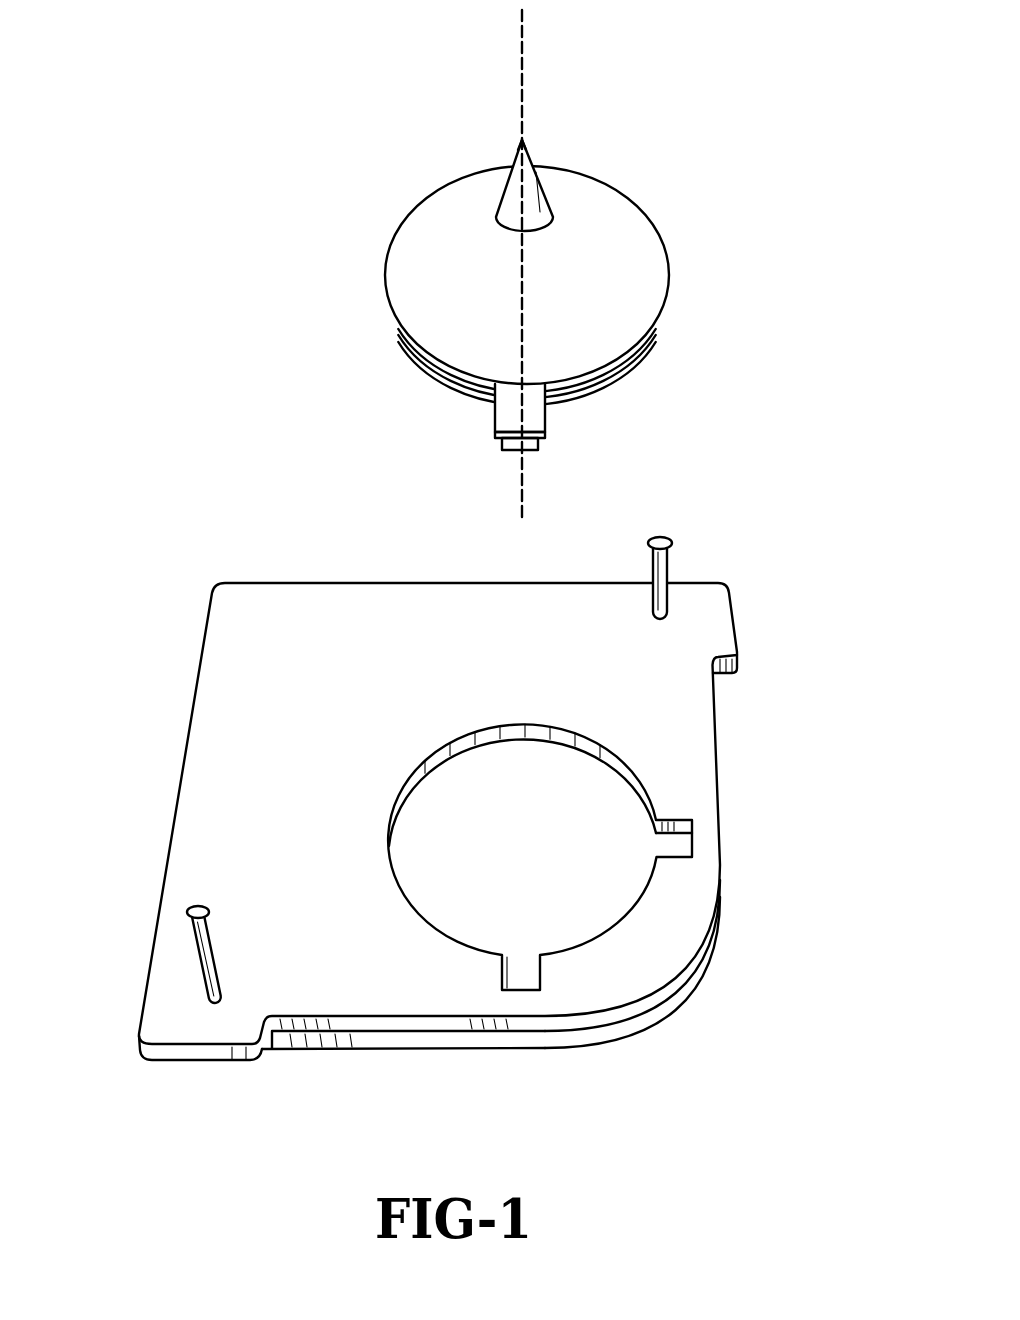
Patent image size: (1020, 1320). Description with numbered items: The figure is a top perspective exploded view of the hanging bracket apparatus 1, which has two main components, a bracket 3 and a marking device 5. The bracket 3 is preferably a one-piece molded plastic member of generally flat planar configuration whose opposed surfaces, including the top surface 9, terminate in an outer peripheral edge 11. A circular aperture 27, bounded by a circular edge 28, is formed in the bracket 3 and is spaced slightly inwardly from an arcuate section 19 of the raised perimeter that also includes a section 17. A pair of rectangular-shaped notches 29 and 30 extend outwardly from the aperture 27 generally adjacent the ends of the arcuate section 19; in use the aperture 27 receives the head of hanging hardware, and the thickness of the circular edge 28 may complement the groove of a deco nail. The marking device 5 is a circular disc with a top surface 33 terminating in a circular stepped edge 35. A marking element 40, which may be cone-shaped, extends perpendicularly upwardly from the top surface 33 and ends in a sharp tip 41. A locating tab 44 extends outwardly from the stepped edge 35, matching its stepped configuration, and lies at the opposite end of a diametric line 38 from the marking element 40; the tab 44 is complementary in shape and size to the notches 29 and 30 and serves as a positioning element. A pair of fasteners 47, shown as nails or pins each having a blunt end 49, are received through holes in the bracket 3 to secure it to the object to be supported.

The apparatus 1 is at (180, 97).
The bracket 3 is at (403, 570).
The marking device 5 is at (435, 178).
The top surface 9 is at (202, 825).
The outer peripheral edge 11 is at (197, 683).
The section 17 is at (388, 1040).
The arcuate section 19 is at (655, 988).
The aperture 27 is at (638, 797).
The circular edge 28 is at (592, 748).
The notch 29 is at (513, 981).
The notch 30 is at (691, 846).
The top surface 33 is at (420, 245).
The stepped edge 35 is at (434, 384).
The diametric line 38 is at (528, 75).
The marking element 40 is at (550, 190).
The tip 41 is at (517, 136).
The locating tab 44 is at (530, 455).
The fastener 47 is at (668, 560).
The blunt end 49 is at (664, 542).